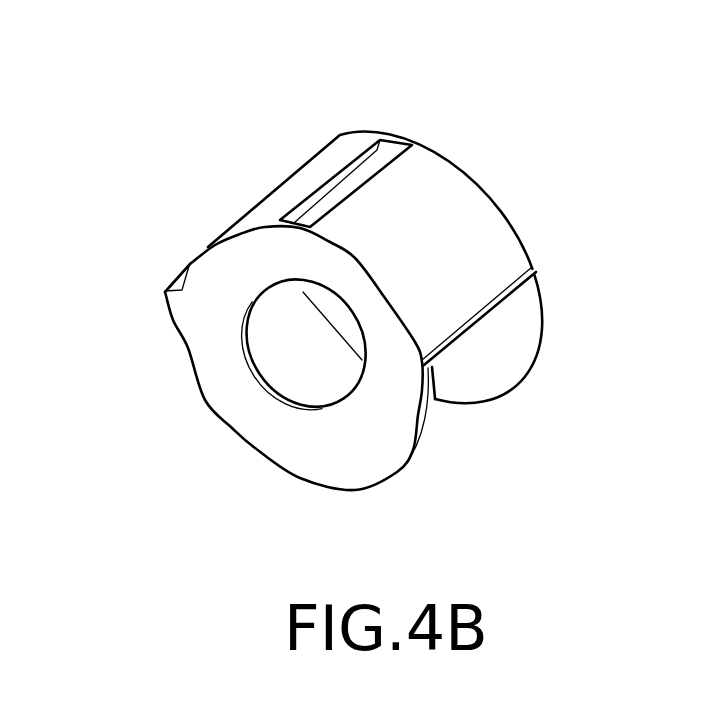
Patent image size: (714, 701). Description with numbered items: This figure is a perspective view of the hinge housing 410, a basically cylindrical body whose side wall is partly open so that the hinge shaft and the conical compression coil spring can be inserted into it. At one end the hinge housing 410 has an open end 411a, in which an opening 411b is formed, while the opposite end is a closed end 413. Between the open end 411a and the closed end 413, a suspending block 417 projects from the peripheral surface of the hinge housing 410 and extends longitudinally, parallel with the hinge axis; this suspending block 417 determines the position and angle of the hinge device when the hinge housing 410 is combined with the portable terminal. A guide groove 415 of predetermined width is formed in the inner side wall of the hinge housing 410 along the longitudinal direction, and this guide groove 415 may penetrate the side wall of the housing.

The hinge housing 410 is at (622, 75).
The open end 411a is at (390, 442).
The opening 411b is at (307, 370).
The closed end 413 is at (492, 358).
The guide groove 415 is at (358, 183).
The suspending block 417 is at (163, 288).